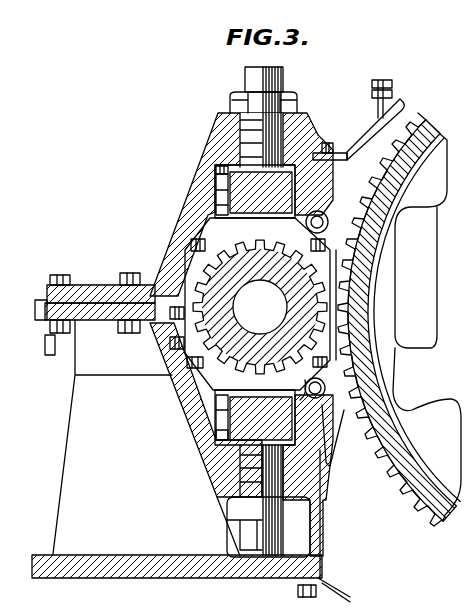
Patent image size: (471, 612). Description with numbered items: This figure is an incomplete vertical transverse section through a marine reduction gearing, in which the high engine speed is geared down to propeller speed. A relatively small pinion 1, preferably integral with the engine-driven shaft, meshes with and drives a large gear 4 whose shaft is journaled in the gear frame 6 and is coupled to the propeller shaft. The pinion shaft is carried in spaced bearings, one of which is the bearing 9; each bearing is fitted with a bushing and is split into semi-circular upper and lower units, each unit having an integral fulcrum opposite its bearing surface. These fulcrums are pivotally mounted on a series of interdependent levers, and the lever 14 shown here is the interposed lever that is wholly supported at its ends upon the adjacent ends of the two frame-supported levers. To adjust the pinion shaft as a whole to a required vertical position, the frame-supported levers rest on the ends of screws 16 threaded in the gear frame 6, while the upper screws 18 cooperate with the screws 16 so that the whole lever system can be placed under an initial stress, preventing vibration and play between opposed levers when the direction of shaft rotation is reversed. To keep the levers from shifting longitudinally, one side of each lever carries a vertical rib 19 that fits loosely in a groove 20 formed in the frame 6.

The pinion 1 is at (232, 278).
The gear 4 is at (388, 467).
The gear frame 6 is at (135, 556).
The pinion shaft bearing 9 is at (232, 237).
The lever 14 is at (307, 152).
The screw 16 is at (253, 470).
The upper screw 18 is at (247, 130).
The vertical rib 19 is at (222, 181).
The groove 20 is at (215, 168).